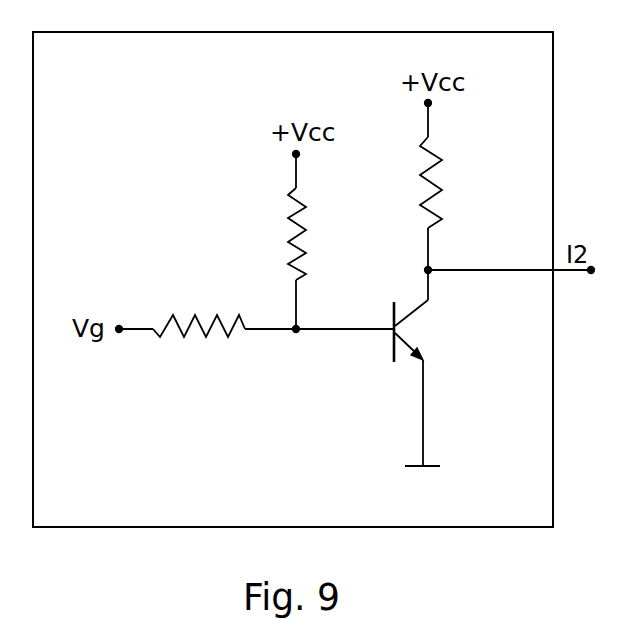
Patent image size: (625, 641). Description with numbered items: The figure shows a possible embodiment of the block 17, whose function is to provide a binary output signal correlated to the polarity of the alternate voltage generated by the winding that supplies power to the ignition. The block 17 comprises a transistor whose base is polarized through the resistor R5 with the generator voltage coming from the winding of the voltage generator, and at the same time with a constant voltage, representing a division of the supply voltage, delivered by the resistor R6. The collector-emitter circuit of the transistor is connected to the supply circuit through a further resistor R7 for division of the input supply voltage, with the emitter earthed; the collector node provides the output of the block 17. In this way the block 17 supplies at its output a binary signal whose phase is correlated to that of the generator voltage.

The block 17 is at (293, 279).
The resistor R5 is at (199, 344).
The resistor R6 is at (274, 234).
The resistor R7 is at (409, 182).